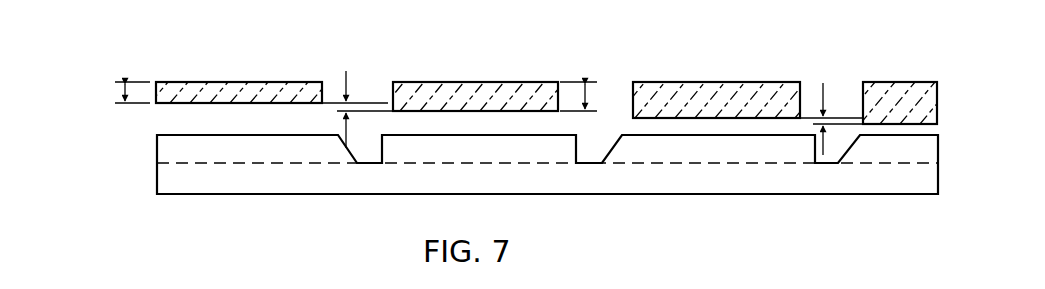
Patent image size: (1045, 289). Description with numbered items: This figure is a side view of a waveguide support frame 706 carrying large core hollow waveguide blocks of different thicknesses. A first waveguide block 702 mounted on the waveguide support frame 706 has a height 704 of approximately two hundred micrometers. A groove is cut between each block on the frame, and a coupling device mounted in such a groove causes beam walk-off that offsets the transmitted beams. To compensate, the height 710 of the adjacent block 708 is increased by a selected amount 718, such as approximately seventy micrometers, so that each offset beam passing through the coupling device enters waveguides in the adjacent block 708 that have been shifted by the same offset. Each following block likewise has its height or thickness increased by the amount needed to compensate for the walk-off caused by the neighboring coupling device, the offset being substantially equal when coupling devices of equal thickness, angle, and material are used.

The first waveguide block 702 is at (279, 82).
The height 704 is at (120, 91).
The waveguide support frame 706 is at (146, 165).
The adjacent block 708 is at (473, 82).
The height 710 is at (592, 92).
The selected amount 718 is at (348, 71).